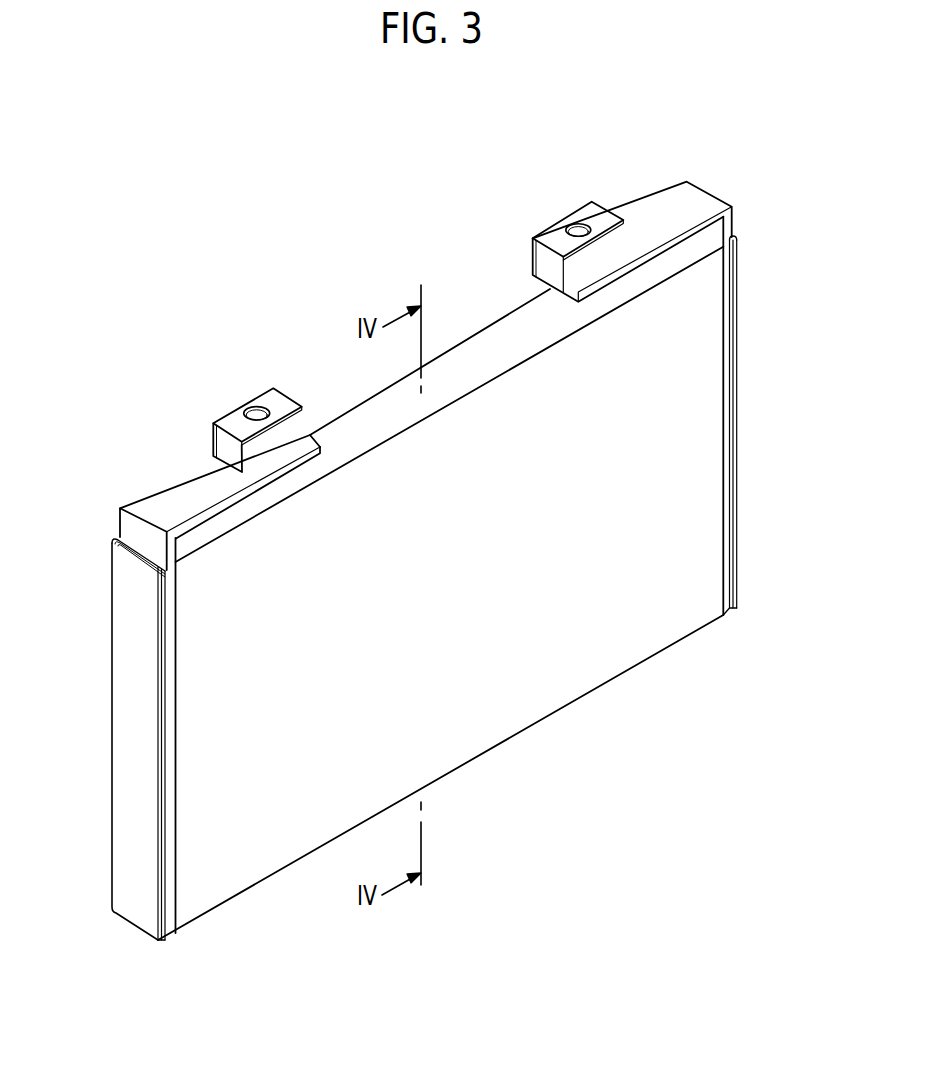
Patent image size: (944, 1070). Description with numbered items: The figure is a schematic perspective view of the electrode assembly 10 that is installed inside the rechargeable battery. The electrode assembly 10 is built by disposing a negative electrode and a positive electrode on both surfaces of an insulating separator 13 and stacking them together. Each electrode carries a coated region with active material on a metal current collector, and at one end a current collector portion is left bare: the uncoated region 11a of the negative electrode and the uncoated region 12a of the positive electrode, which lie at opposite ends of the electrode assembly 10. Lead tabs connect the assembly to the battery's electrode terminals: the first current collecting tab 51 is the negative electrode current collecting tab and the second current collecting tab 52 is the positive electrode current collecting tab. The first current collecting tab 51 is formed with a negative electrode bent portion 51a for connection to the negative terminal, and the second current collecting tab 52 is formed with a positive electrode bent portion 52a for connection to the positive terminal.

The electrode assembly 10 is at (555, 680).
The uncoated region of the negative electrode 11a is at (162, 903).
The uncoated region of the positive electrode 12a is at (736, 587).
The separator 13 is at (137, 908).
The first current collecting tab 51 is at (165, 498).
The negative electrode bent portion 51a is at (233, 420).
The second current collecting tab 52 is at (702, 202).
The positive electrode bent portion 52a is at (585, 215).